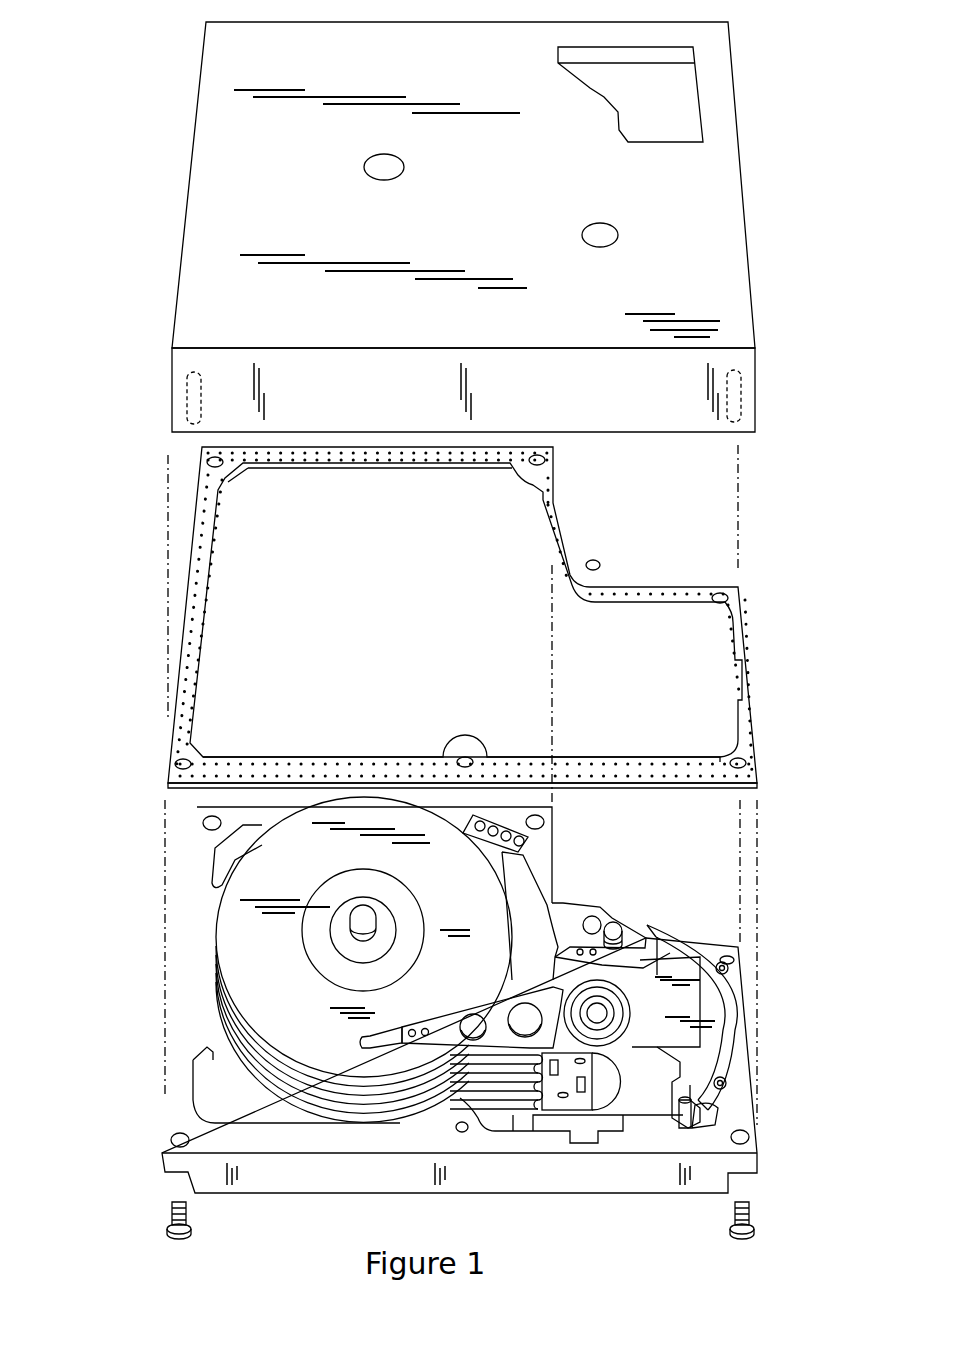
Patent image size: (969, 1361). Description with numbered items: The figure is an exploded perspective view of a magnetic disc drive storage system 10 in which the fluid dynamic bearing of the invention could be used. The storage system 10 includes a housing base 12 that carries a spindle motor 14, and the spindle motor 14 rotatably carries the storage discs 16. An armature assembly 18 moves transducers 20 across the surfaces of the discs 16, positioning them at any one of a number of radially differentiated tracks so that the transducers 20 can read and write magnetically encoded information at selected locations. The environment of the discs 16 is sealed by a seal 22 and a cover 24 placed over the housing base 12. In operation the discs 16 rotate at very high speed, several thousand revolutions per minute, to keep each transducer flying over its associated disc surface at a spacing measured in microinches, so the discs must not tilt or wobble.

The storage system 10 is at (754, 90).
The housing base 12 is at (757, 1045).
The spindle motor 14 is at (340, 938).
The storage discs 16 is at (298, 1011).
The armature assembly 18 is at (485, 1118).
The transducers 20 is at (367, 1045).
The seal 22 is at (748, 680).
The cover 24 is at (745, 197).